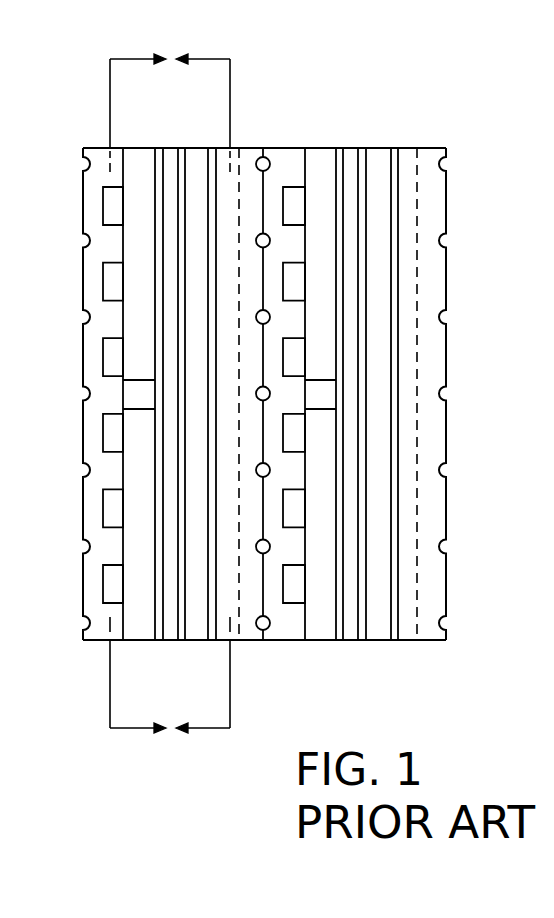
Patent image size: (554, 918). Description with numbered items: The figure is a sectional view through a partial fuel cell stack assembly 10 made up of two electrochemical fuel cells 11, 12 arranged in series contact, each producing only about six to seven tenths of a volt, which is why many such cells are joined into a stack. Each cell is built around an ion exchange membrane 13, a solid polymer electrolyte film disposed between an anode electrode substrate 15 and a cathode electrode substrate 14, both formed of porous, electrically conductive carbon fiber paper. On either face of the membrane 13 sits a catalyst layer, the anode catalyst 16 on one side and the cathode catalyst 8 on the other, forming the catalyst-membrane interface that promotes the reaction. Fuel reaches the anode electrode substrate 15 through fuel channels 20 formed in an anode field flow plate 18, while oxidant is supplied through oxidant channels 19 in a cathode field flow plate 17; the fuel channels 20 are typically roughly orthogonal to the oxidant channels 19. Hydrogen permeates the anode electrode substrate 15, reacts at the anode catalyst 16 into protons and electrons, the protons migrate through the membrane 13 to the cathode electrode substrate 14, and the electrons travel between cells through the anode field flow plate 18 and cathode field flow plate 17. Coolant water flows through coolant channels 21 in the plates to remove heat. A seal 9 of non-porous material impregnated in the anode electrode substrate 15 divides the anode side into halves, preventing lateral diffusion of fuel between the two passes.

The cathode catalyst 8 is at (178, 148).
The seal 9 is at (133, 393).
The partial fuel cell stack assembly 10 is at (478, 562).
The fuel cell 11 is at (170, 647).
The fuel cell 12 is at (360, 668).
The ion exchange membrane 13 is at (170, 148).
The cathode electrode substrate 14 is at (198, 148).
The anode electrode substrate 15 is at (137, 148).
The anode catalyst 16 is at (155, 148).
The cathode field flow plate 17 is at (243, 157).
The anode field flow plate 18 is at (96, 148).
The oxidant channels 19 is at (230, 293).
The fuel channels 20 is at (116, 210).
The coolant channels 21 is at (447, 240).